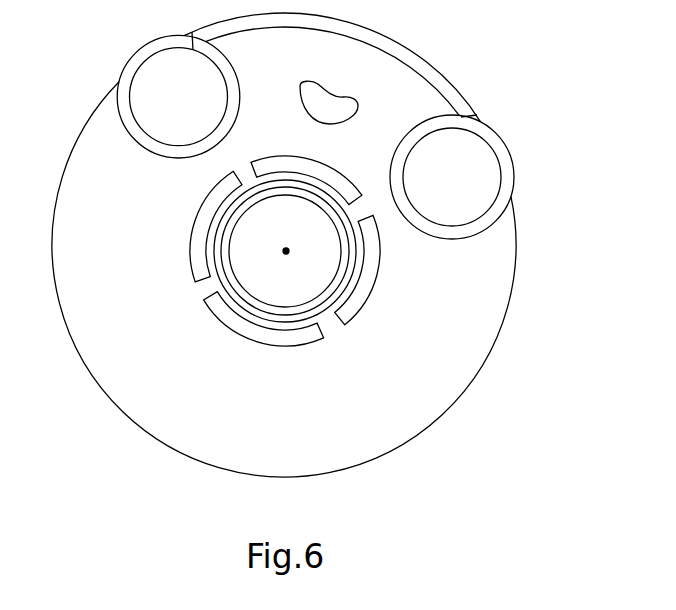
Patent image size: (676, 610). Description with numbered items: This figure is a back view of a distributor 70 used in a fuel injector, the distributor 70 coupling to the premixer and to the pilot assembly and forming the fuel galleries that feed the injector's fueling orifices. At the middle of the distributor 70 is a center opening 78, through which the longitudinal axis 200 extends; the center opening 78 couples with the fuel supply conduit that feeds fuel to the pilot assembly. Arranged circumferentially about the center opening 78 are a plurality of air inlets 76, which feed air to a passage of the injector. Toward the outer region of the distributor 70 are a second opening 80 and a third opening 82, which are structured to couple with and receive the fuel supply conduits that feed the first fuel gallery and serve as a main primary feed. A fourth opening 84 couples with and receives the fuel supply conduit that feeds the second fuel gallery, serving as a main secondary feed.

The distributor 70 is at (44, 312).
The air inlets 76 is at (296, 158).
The center opening 78 is at (232, 247).
The second opening 80 is at (148, 56).
The third opening 82 is at (490, 146).
The fourth opening 84 is at (343, 96).
The longitudinal axis 200 is at (286, 253).